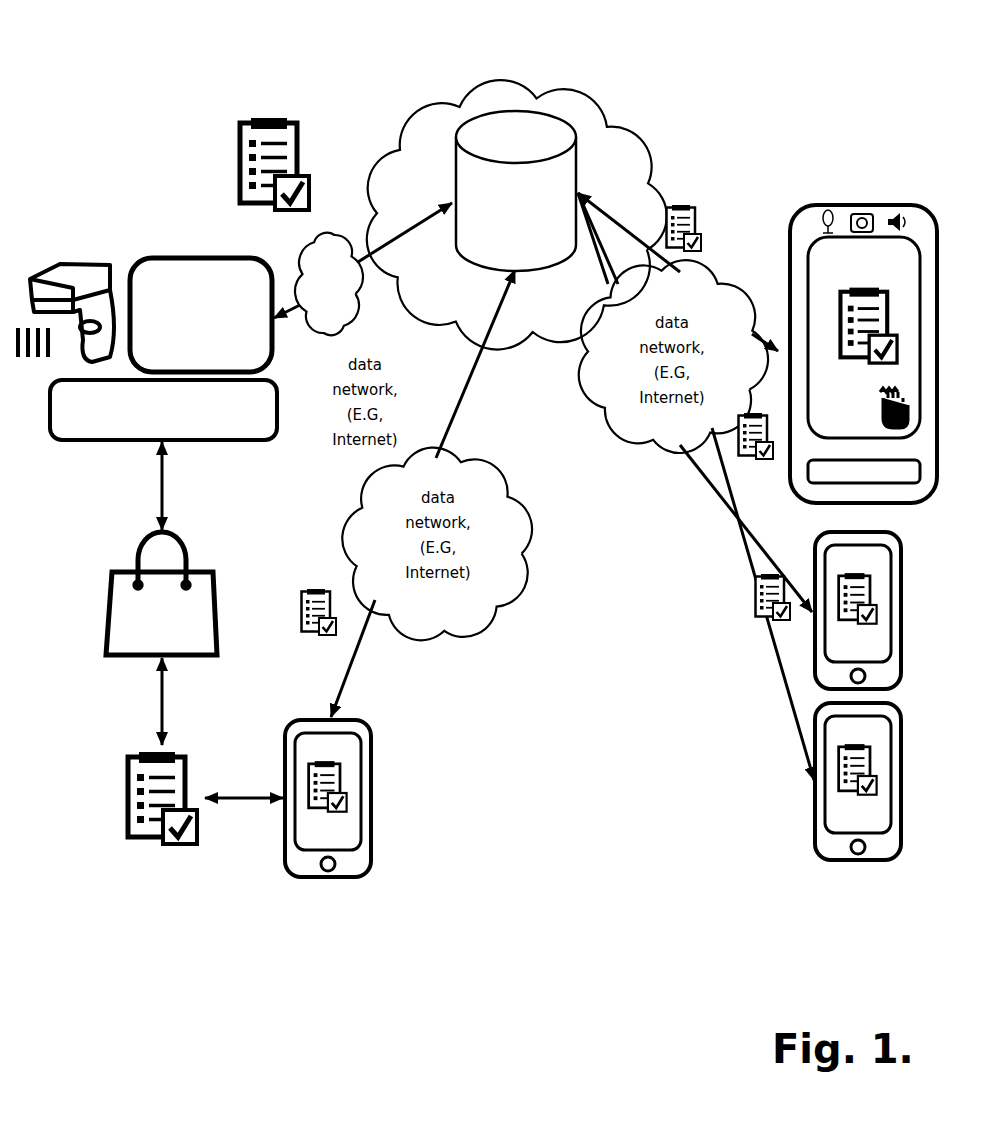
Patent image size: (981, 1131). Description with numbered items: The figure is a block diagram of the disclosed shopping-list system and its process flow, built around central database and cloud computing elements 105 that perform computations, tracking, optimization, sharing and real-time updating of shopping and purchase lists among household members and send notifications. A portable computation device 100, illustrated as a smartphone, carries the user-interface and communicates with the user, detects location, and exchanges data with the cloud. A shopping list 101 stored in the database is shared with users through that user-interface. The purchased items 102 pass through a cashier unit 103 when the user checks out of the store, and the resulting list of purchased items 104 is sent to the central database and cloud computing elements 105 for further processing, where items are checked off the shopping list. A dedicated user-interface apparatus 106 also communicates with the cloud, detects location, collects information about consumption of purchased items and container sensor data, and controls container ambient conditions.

The portable computation device 100 is at (302, 735).
The shopping list 101 is at (135, 775).
The purchased items 102 is at (138, 632).
The cashier unit 103 is at (183, 275).
The list of purchased items 104 is at (270, 150).
The central database and cloud computing elements 105 is at (470, 186).
The user-interface apparatus 106 is at (848, 225).